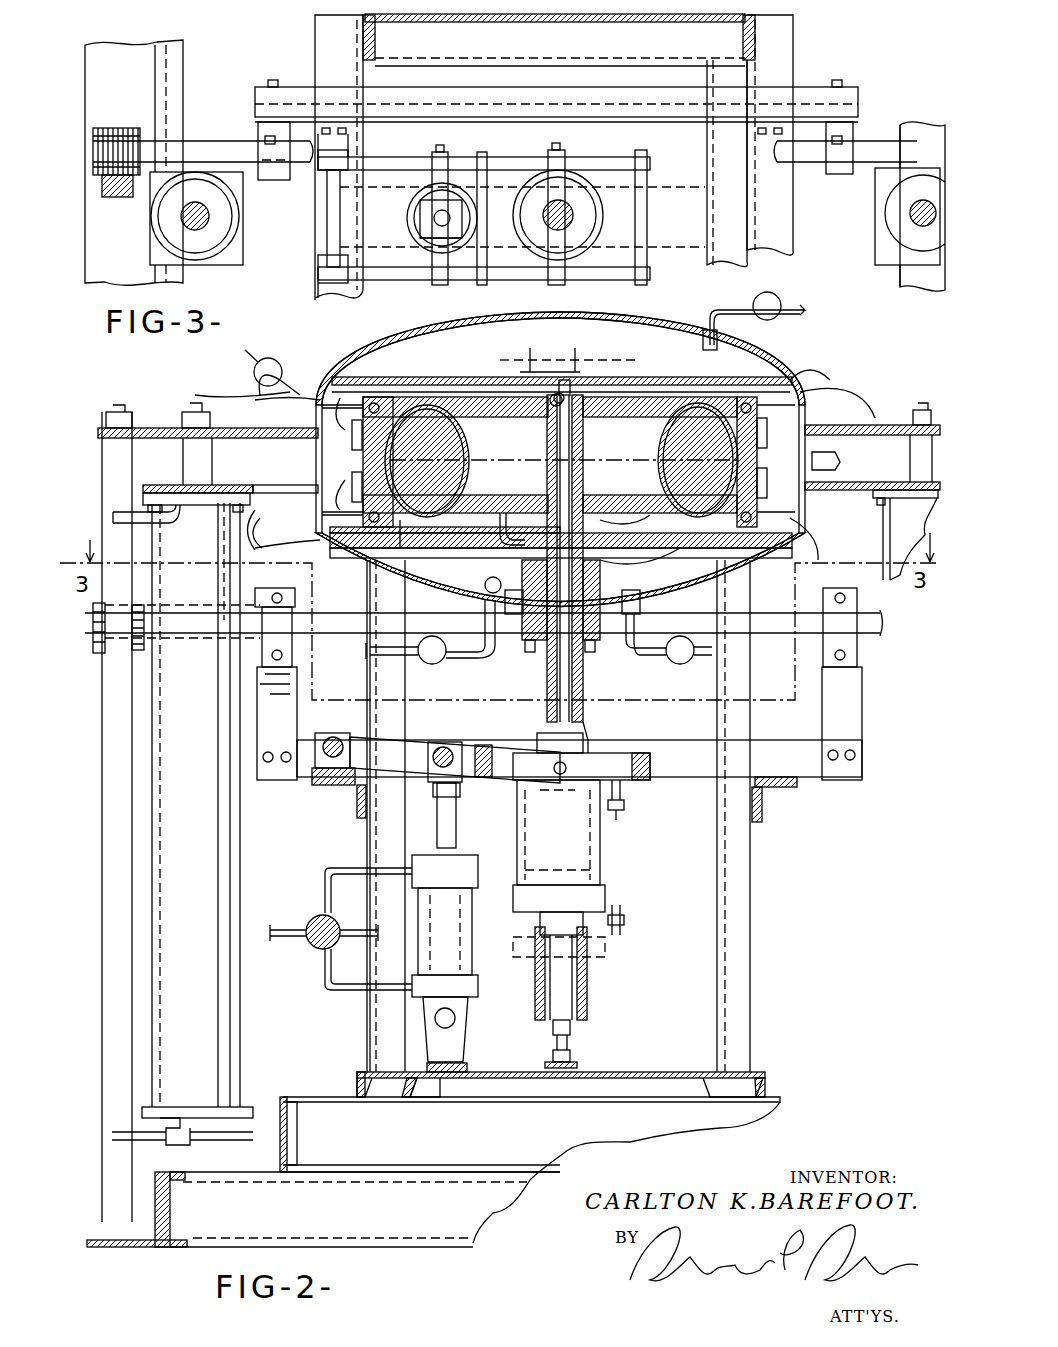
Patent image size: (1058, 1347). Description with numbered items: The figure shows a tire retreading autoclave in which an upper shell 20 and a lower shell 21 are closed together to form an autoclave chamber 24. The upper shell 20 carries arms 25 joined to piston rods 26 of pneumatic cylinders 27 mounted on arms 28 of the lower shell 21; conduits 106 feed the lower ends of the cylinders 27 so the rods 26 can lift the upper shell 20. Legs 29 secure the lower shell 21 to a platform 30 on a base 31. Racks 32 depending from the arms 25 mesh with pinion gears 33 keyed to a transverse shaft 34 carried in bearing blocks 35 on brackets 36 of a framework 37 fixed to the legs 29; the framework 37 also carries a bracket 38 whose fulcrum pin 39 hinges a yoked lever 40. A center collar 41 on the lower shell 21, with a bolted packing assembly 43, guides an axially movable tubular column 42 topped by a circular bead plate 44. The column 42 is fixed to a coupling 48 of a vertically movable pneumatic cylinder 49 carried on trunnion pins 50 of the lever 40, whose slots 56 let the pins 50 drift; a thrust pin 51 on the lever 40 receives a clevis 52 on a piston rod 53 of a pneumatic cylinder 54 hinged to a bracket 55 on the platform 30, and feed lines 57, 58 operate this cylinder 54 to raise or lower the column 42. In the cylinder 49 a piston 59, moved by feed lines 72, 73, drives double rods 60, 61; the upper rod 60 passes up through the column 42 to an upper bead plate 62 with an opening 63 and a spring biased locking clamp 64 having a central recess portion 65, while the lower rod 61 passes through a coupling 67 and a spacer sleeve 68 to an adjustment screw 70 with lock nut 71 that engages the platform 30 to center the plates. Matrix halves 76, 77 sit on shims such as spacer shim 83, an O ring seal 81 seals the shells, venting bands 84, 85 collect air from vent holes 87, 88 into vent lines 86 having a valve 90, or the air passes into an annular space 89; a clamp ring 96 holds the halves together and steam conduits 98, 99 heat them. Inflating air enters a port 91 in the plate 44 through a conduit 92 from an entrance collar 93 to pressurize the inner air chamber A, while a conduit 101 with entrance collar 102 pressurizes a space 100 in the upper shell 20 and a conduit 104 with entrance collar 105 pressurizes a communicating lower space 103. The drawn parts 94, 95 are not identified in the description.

In FIG. 2, the upper shell 20 is at (340, 367).
In FIG. 2, the lower shell 21 is at (362, 570).
In FIG. 2, the autoclave chamber 24 is at (781, 362).
In FIG. 2, the arms 25 is at (246, 438).
In FIG. 3, the piston rods 26 is at (182, 225).
In FIG. 2, the piston rods 26 is at (183, 468).
In FIG. 3, the pneumatic cylinders 27 is at (200, 270).
In FIG. 2, the pneumatic cylinders 27 is at (238, 1002).
In FIG. 2, the arms 28 is at (274, 487).
In FIG. 3, the legs 29 is at (355, 36).
In FIG. 2, the legs 29 is at (367, 1040).
In FIG. 3, the platform 30 is at (690, 174).
In FIG. 2, the platform 30 is at (750, 1070).
In FIG. 3, the base 31 is at (176, 62).
In FIG. 2, the base 31 is at (100, 1252).
In FIG. 3, the racks 32 is at (104, 200).
In FIG. 3, the pinion gears 33 is at (122, 128).
In FIG. 2, the pinion gears 33 is at (95, 655).
In FIG. 3, the transverse shaft 34 is at (242, 140).
In FIG. 2, the transverse shaft 34 is at (784, 600).
In FIG. 3, the bearing blocks 35 is at (262, 180).
In FIG. 2, the bearing blocks 35 is at (292, 650).
In FIG. 3, the brackets 36 is at (350, 136).
In FIG. 2, the brackets 36 is at (297, 690).
In FIG. 3, the framework 37 is at (810, 87).
In FIG. 2, the framework 37 is at (355, 808).
In FIG. 3, the bracket 38 is at (318, 262).
In FIG. 2, the bracket 38 is at (348, 737).
In FIG. 3, the fulcrum pin 39 is at (327, 218).
In FIG. 2, the fulcrum pin 39 is at (322, 745).
In FIG. 3, the yoked lever 40 is at (345, 284).
In FIG. 2, the yoked lever 40 is at (385, 740).
In FIG. 2, the center collar 41 is at (596, 572).
In FIG. 3, the tubular column 42 is at (570, 202).
In FIG. 2, the tubular column 42 is at (547, 686).
In FIG. 2, the packing assembly 43 is at (447, 654).
In FIG. 2, the bead plate 44 is at (490, 558).
In FIG. 2, the coupling 48 is at (586, 740).
In FIG. 2, the pneumatic cylinder 49 is at (517, 840).
In FIG. 3, the trunnion pins 50 is at (548, 154).
In FIG. 2, the trunnion pins 50 is at (568, 765).
In FIG. 3, the thrust pin 51 is at (450, 140).
In FIG. 2, the thrust pin 51 is at (450, 748).
In FIG. 3, the clevis 52 is at (428, 206).
In FIG. 2, the clevis 52 is at (456, 787).
In FIG. 3, the piston rod 53 is at (432, 220).
In FIG. 2, the piston rod 53 is at (445, 837).
In FIG. 3, the pneumatic cylinder 54 is at (420, 242).
In FIG. 2, the pneumatic cylinder 54 is at (478, 970).
In FIG. 2, the bracket 55 is at (468, 1047).
In FIG. 3, the slots 56 is at (575, 157).
In FIG. 2, the slots 56 is at (537, 747).
In FIG. 2, the pneumatic feed line 57 is at (322, 974).
In FIG. 2, the pneumatic feed line 58 is at (338, 870).
In FIG. 2, the piston 59 is at (580, 855).
In FIG. 3, the piston rod 60 is at (548, 230).
In FIG. 2, the piston rod 60 is at (583, 448).
In FIG. 2, the piston rod 61 is at (605, 884).
In FIG. 2, the upper bead plate 62 is at (633, 417).
In FIG. 2, the opening 63 is at (548, 437).
In FIG. 2, the spring biased locking clamp 64 is at (508, 422).
In FIG. 2, the central recess portion 65 is at (545, 392).
In FIG. 2, the coupling 67 is at (540, 926).
In FIG. 2, the spacer sleeve 68 is at (588, 977).
In FIG. 2, the adjustment screw 70 is at (578, 1058).
In FIG. 2, the lock nut 71 is at (572, 1030).
In FIG. 2, the pneumatic feed line 72 is at (625, 810).
In FIG. 2, the pneumatic feed line 73 is at (625, 924).
In FIG. 2, the matrix half 76 is at (400, 387).
In FIG. 2, the matrix half 77 is at (395, 547).
In FIG. 2, the O ring seal 81 is at (808, 458).
In FIG. 2, the spacer shim 83 is at (712, 554).
In FIG. 2, the venting band 84 is at (355, 442).
In FIG. 2, the venting band 85 is at (342, 483).
In FIG. 2, the vent lines 86 is at (283, 470).
In FIG. 2, the vent holes 87 is at (390, 428).
In FIG. 2, the vent holes 88 is at (398, 480).
In FIG. 2, the annular space 89 is at (779, 484).
In FIG. 2, the valve 90 is at (261, 372).
In FIG. 2, the port 91 is at (512, 512).
In FIG. 2, the conduit 92 is at (618, 512).
In FIG. 2, the entrance collar 93 is at (480, 587).
In FIG. 2, the mold cavity 94 is at (710, 460).
In FIG. 2, the pipe 95 is at (113, 512).
In FIG. 2, the clamp ring 96 is at (838, 462).
In FIG. 2, the steam conduit 98 is at (215, 395).
In FIG. 2, the steam conduit 99 is at (545, 527).
In FIG. 2, the space 100 is at (580, 336).
In FIG. 2, the fluid conduit 101 is at (782, 315).
In FIG. 2, the entrance collar 102 is at (700, 347).
In FIG. 2, the lower space 103 is at (423, 549).
In FIG. 2, the conduit 104 is at (648, 662).
In FIG. 2, the entrance collar 105 is at (640, 594).
In FIG. 2, the conduits 106 is at (192, 1099).
In FIG. 2, the inner air chamber A is at (712, 491).